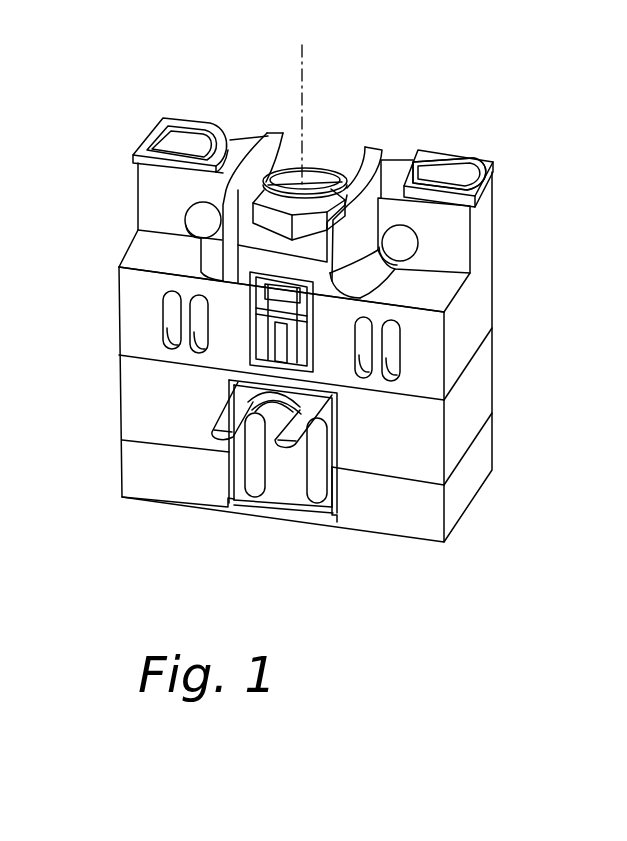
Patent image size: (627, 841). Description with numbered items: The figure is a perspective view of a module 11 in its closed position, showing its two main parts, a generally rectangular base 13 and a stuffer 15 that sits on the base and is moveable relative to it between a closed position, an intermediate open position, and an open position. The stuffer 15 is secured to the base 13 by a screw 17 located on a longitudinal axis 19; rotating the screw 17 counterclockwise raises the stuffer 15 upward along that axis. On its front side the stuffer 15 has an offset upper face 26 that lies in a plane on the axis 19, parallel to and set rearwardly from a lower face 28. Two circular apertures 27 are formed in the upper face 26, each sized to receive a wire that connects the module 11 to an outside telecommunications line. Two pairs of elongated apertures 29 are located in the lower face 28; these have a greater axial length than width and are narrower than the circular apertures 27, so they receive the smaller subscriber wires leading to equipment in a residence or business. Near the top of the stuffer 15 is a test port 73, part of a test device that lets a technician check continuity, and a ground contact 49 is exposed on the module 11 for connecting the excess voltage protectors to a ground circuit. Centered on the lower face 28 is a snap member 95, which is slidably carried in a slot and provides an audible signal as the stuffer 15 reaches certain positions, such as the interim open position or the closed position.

The module 11 is at (512, 294).
The base 13 is at (462, 419).
The stuffer 15 is at (460, 342).
The screw 17 is at (308, 174).
The longitudinal axis 19 is at (305, 70).
The offset upper face 26 is at (440, 237).
The circular apertures 27 is at (187, 212).
The lower face 28 is at (145, 287).
The elongated apertures 29 is at (249, 296).
The ground contact 49 is at (220, 423).
The test port 73 is at (443, 170).
The snap member 95 is at (278, 297).